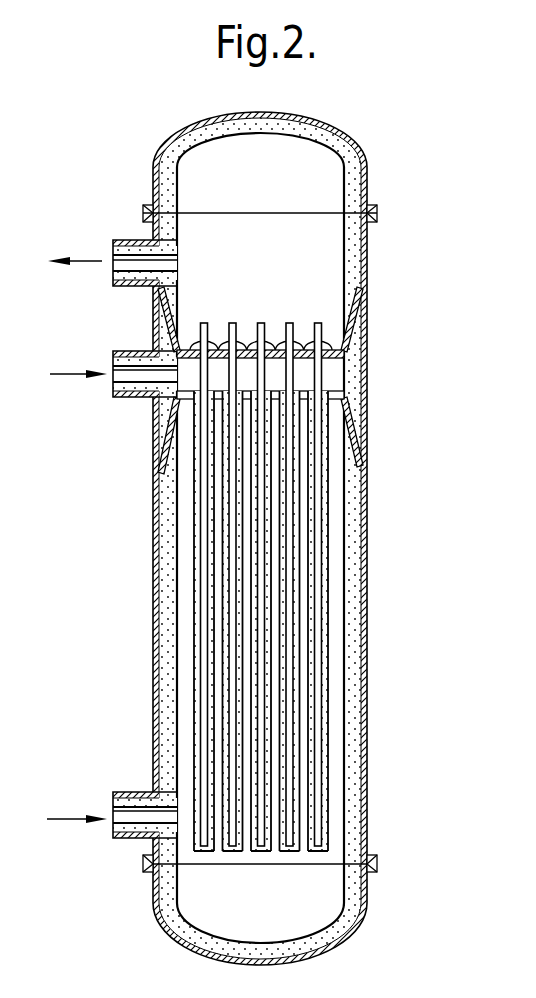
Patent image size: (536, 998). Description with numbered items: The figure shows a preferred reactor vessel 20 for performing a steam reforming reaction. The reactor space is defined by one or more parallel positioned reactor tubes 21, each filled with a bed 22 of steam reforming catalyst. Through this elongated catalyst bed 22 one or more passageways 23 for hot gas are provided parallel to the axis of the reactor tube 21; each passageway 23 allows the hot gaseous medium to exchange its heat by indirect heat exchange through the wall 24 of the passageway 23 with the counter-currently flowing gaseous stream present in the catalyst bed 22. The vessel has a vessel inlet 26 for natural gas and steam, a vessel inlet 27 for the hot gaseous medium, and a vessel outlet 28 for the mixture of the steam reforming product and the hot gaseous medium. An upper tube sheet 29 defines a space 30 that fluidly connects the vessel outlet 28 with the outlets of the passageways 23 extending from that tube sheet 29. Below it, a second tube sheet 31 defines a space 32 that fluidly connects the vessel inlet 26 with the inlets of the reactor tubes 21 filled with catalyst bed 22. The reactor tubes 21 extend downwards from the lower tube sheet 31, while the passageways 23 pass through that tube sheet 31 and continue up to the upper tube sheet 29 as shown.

The reactor vessel 20 is at (363, 723).
The reactor tube 21 is at (325, 840).
The catalyst bed 22 is at (325, 807).
The passageway for hot gas 23 is at (320, 328).
The wall of the conduit 24 is at (322, 702).
The vessel inlet for natural gas and steam 26 is at (124, 399).
The vessel inlet for hot gaseous medium 27 is at (123, 839).
The vessel outlet 28 is at (128, 240).
The tube sheet 29 is at (344, 353).
The space 30 is at (305, 268).
The tube sheet 31 is at (344, 399).
The space 32 is at (330, 377).